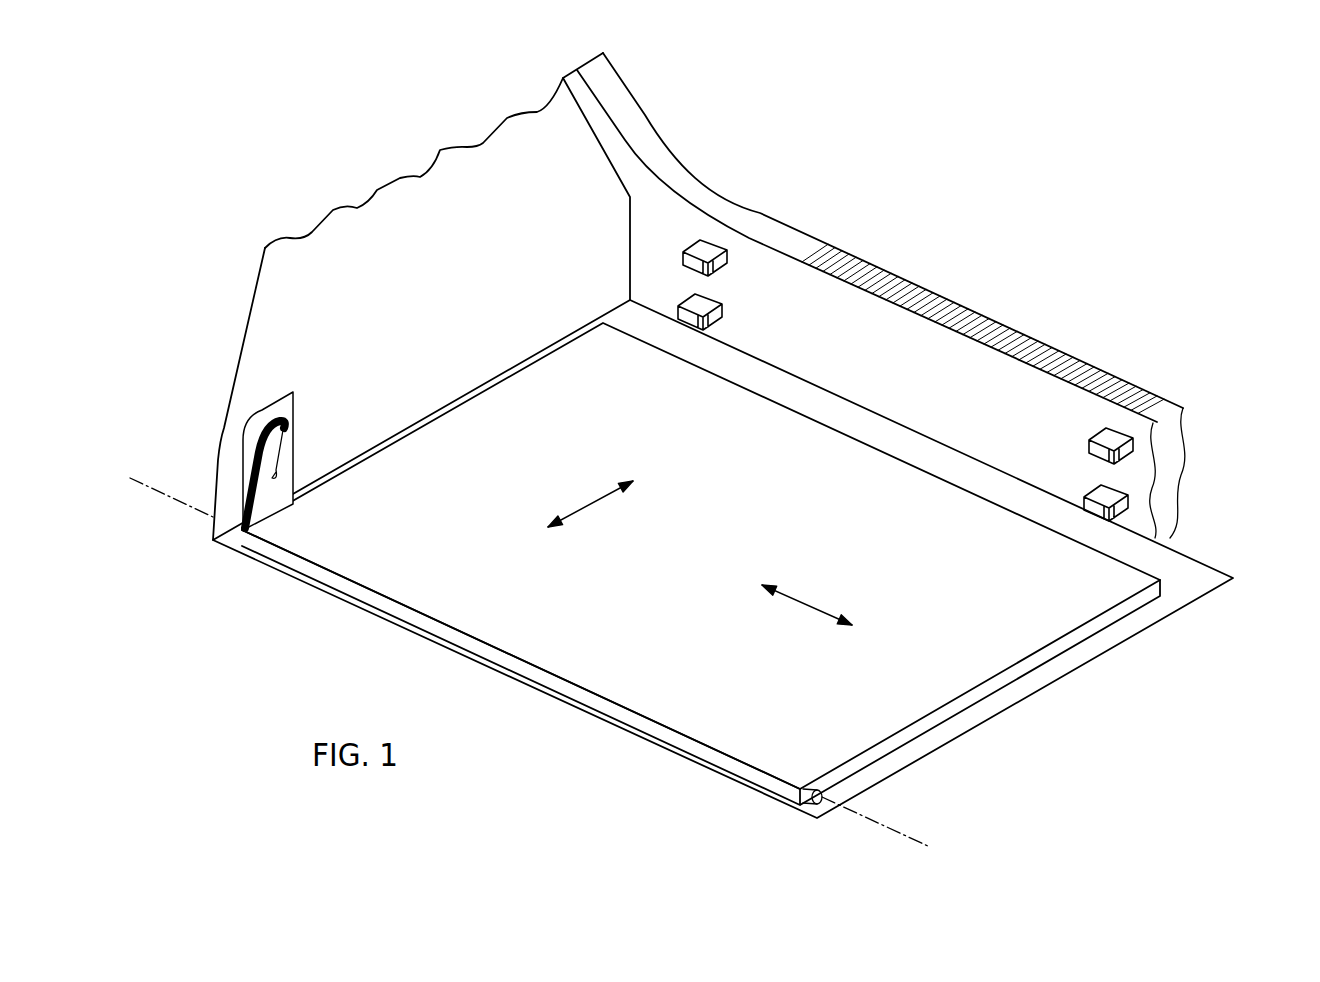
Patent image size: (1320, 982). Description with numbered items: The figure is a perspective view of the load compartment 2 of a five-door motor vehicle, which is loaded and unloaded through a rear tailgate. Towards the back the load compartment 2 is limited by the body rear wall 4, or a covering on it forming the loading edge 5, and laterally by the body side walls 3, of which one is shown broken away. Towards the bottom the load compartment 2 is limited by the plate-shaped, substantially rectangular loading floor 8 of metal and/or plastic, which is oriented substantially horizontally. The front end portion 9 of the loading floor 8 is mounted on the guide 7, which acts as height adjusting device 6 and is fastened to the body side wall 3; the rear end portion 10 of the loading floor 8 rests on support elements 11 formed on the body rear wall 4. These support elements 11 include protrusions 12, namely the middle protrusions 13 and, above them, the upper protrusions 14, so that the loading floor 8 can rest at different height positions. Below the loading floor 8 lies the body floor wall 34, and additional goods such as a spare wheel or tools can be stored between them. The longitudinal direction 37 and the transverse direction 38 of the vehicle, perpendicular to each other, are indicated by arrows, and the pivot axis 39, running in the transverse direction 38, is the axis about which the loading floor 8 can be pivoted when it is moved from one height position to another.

The load compartment 2 is at (1195, 546).
The body side wall 3 is at (462, 290).
The body rear wall 4 is at (881, 295).
The loading edge 5 is at (913, 293).
The height adjusting device 6 is at (220, 461).
The guide 7 is at (240, 457).
The loading floor 8 is at (681, 553).
The front end portion 9 is at (622, 682).
The rear end portion 10 is at (958, 505).
The support element 11 is at (990, 330).
The protrusion 12 is at (990, 330).
The middle protrusion 13 is at (707, 298).
The upper protrusion 14 is at (703, 240).
The body floor wall 34 is at (1070, 678).
The longitudinal direction 37 is at (584, 503).
The transverse direction 38 is at (808, 603).
The pivot axis 39 is at (912, 842).